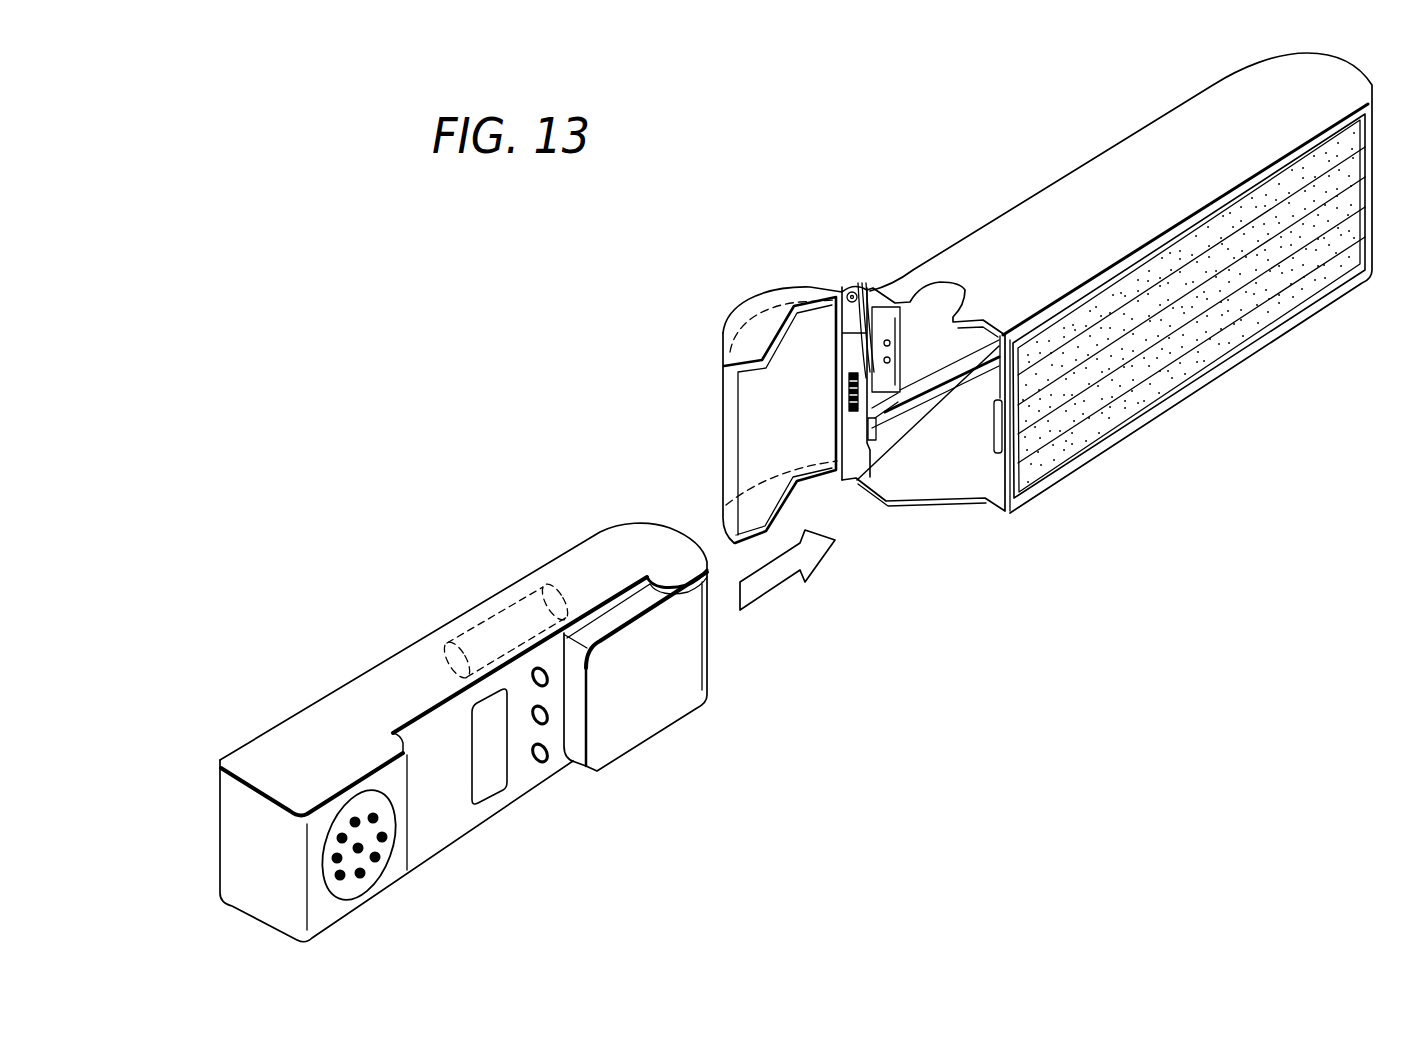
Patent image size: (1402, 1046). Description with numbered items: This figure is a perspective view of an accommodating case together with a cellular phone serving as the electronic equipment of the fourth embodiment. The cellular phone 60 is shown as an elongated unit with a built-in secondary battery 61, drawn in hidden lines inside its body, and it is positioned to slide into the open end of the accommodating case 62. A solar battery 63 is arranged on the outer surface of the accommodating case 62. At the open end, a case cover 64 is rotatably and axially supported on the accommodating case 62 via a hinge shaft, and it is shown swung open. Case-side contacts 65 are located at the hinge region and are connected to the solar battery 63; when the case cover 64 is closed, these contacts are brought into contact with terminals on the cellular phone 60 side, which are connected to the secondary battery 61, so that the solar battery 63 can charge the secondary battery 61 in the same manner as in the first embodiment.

The cellular phone 60 is at (463, 812).
The secondary battery 61 is at (490, 627).
The accommodating case 62 is at (1030, 213).
The solar battery 63 is at (1080, 443).
The case cover 64 is at (758, 322).
The case-side contacts 65 is at (860, 282).